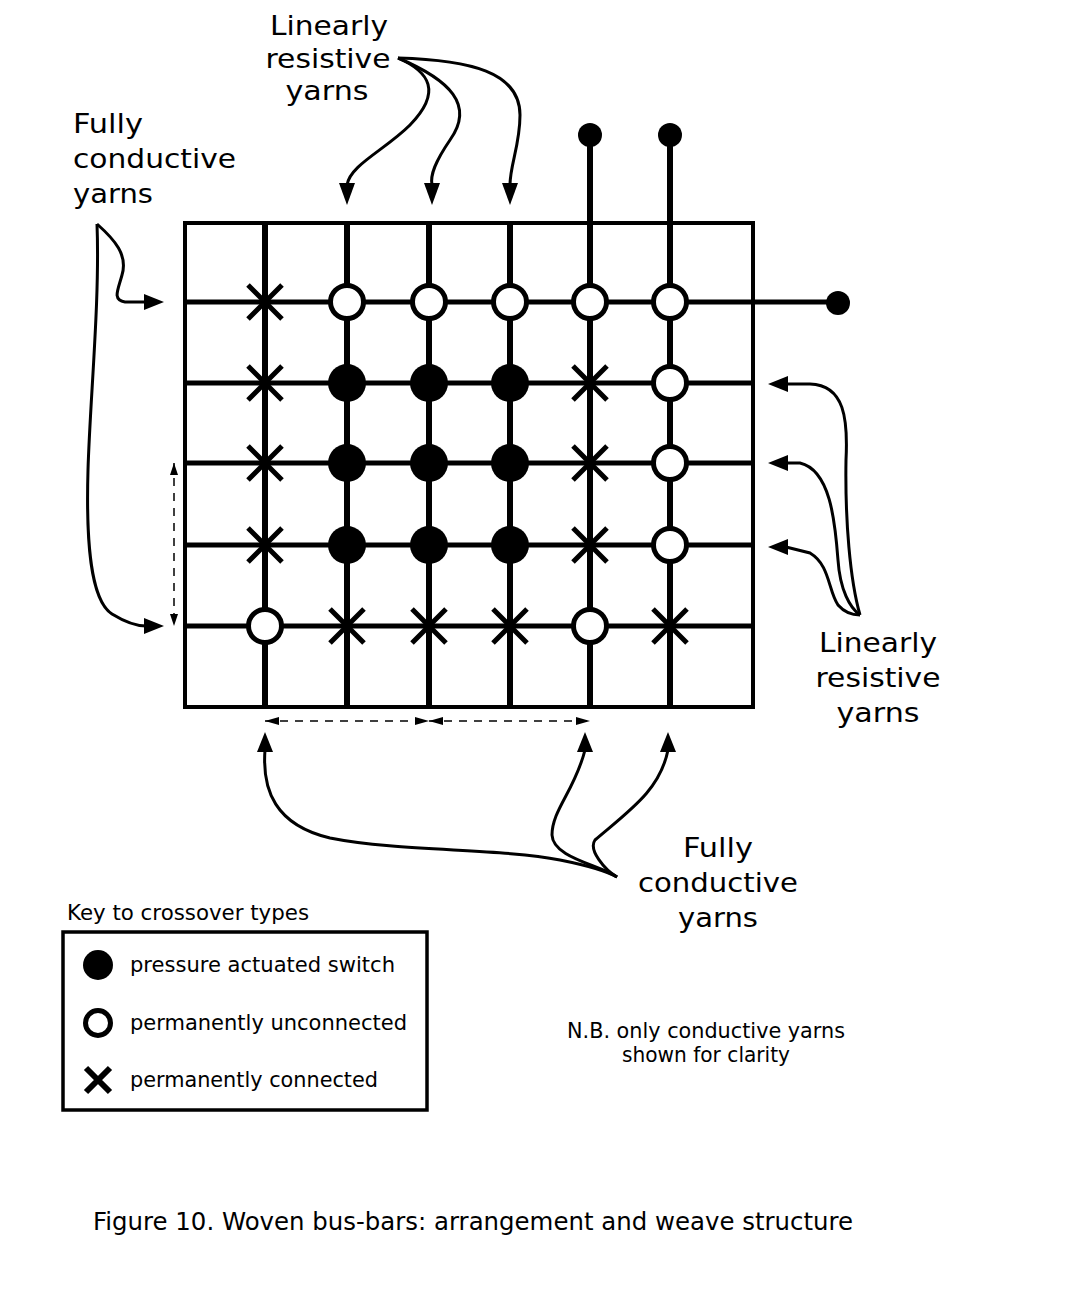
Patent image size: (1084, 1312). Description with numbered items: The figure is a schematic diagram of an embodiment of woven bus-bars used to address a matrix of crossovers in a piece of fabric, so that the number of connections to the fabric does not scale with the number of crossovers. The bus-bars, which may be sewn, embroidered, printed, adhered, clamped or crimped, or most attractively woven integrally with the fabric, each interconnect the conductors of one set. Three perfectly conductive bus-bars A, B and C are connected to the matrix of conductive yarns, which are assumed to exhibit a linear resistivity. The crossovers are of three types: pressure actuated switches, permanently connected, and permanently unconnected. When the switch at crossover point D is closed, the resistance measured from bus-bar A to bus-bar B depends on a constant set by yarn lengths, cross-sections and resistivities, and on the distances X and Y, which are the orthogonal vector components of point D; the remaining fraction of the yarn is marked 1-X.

The bus-bar A is at (534, 308).
The bus-bar B is at (670, 392).
The bus-bar C is at (590, 392).
The crossover point D is at (420, 477).
The distance X is at (347, 736).
The complementary distance 1-X is at (509, 736).
The distance Y is at (164, 544).